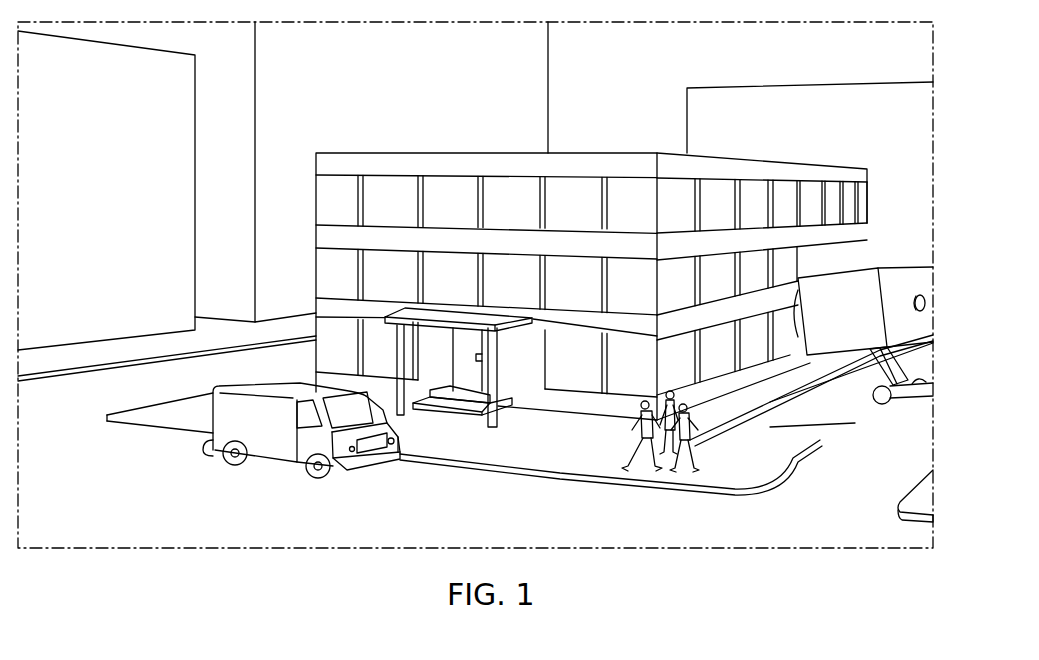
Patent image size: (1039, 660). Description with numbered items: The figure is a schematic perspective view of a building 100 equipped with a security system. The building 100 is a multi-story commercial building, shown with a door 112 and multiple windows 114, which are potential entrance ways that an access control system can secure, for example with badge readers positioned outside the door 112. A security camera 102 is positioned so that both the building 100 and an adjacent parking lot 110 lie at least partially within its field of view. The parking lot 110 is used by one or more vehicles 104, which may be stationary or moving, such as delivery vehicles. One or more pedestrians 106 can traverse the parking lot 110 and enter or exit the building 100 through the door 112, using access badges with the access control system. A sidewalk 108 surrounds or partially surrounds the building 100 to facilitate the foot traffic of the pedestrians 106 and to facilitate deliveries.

The building 100 is at (471, 135).
The security camera 102 is at (930, 263).
The vehicles 104 is at (245, 384).
The pedestrians 106 is at (653, 483).
The sidewalk 108 is at (790, 437).
The parking lot 110 is at (838, 496).
The door 112 is at (474, 333).
The windows 114 is at (336, 193).